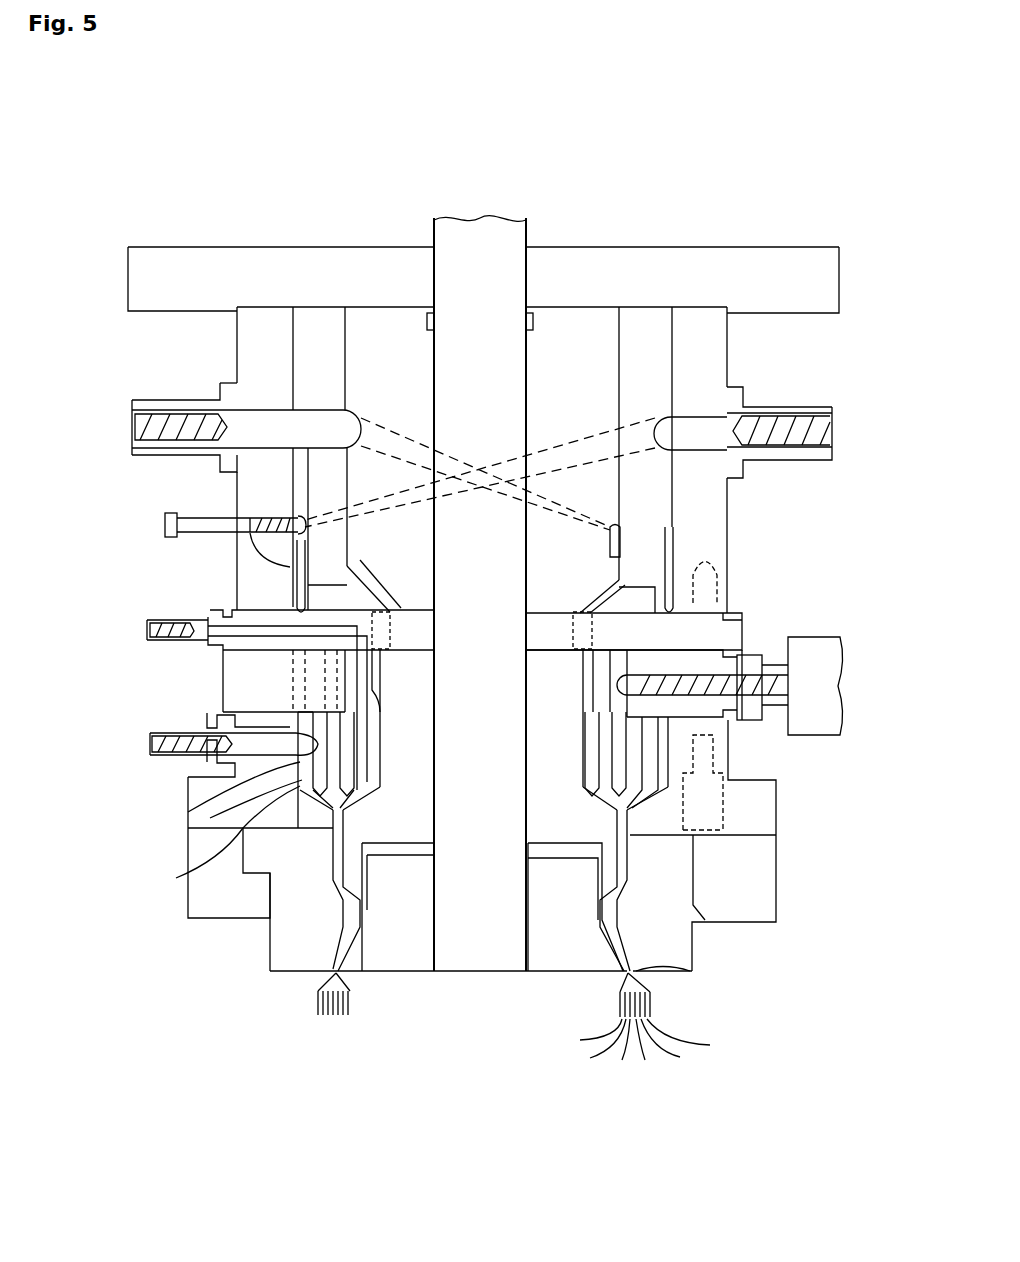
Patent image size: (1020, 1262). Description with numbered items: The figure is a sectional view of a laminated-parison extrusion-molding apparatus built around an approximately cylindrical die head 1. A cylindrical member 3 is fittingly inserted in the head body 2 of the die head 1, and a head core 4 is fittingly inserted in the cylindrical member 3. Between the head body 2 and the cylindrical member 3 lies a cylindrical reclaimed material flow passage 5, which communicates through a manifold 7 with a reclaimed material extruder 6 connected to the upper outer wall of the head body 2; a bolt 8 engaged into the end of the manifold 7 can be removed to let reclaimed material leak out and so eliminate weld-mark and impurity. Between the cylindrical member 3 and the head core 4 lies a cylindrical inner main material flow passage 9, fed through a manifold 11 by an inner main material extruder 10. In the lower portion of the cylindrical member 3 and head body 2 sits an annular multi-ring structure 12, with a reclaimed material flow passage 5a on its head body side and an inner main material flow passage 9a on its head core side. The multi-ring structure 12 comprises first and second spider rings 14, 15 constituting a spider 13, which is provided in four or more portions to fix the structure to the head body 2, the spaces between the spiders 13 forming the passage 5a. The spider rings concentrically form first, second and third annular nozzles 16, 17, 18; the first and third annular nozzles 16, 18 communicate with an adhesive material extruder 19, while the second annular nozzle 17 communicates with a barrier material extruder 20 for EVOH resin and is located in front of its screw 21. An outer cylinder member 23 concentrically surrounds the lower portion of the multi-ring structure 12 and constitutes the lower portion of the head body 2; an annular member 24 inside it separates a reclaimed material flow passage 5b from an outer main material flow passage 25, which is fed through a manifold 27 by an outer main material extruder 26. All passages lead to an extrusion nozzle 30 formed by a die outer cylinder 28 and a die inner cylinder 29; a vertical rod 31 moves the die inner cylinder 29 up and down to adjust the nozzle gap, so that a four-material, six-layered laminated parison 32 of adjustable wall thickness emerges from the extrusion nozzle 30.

The die head 1 is at (118, 328).
The head body 2 is at (248, 383).
The cylindrical member 3 is at (300, 342).
The head core 4 is at (365, 322).
The reclaimed material flow passage 5 is at (250, 532).
The reclaimed material flow passage 5a is at (290, 684).
The reclaimed material flow passage 5b is at (188, 812).
The reclaimed material extruder 6 is at (792, 407).
The manifold 7 is at (590, 432).
The bolt 8 is at (205, 514).
The inner main material flow passage 9 is at (350, 550).
The inner main material flow passage 9a is at (382, 706).
The inner main material extruder 10 is at (150, 456).
The manifold 11 is at (396, 424).
The multi-ring structure 12 is at (217, 608).
The spider 13 is at (290, 610).
The first spider ring 14 is at (225, 650).
The second spider ring 15 is at (230, 668).
The first annular nozzle 16 is at (358, 778).
The second annular nozzle 17 is at (362, 800).
The third annular nozzle 18 is at (318, 812).
The adhesive material extruder 19 is at (150, 624).
The barrier material extruder 20 is at (823, 633).
The screw 21 is at (745, 656).
The outer cylinder member 23 is at (188, 822).
The annular member 24 is at (282, 735).
The outer main material flow passage 25 is at (215, 842).
The outer main material extruder 26 is at (150, 736).
The manifold 27 is at (297, 768).
The die outer cylinder 28 is at (690, 945).
The die inner cylinder 29 is at (583, 967).
The extrusion nozzle 30 is at (695, 969).
The vertical rod 31 is at (512, 242).
The laminated parison 32 is at (652, 1010).